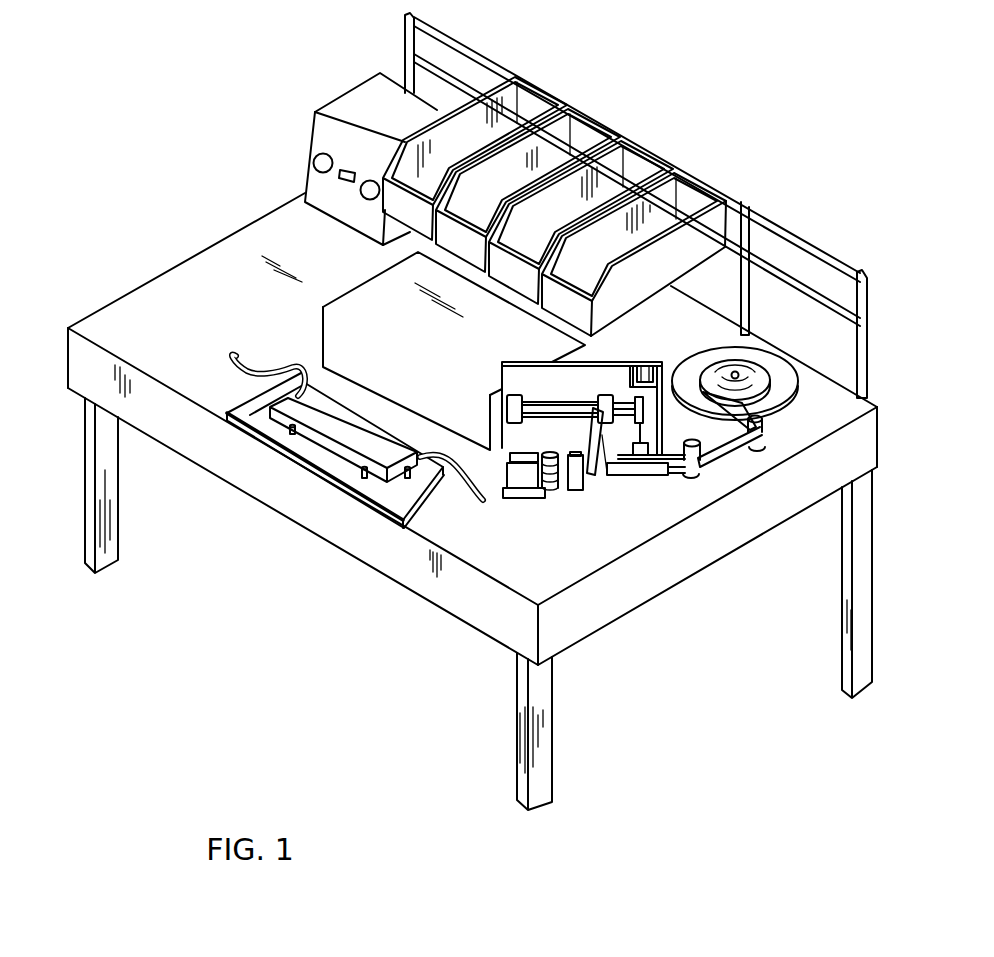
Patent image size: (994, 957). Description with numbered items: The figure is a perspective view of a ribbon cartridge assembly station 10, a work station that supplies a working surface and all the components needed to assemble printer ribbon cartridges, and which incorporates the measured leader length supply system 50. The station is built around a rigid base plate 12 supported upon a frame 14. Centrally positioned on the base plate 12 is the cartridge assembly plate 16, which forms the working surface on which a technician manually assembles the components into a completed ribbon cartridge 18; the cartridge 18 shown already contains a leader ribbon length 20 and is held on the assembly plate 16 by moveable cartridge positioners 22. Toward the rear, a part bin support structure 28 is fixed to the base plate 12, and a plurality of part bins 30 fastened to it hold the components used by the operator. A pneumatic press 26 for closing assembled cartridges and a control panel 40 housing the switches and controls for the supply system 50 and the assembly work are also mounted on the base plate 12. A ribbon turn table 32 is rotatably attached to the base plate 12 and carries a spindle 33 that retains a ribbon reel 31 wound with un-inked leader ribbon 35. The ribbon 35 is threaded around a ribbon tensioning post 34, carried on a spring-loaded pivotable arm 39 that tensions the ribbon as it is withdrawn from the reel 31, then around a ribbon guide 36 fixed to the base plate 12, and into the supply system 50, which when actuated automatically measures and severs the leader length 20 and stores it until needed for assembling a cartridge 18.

The ribbon cartridge assembly station 10 is at (212, 224).
The base plate 12 is at (133, 336).
The frame 14 is at (110, 538).
The cartridge assembly plate 16 is at (412, 500).
The ribbon cartridge 18 is at (350, 441).
The leader ribbon length 20 is at (268, 372).
The moveable cartridge positioners 22 is at (360, 474).
The pneumatic press 26 is at (556, 363).
The part bin support structure 28 is at (746, 213).
The part bins 30 is at (538, 100).
The ribbon reel 31 is at (752, 371).
The ribbon turn table 32 is at (792, 385).
The spindle 33 is at (739, 373).
The ribbon tensioning post 34 is at (766, 422).
The leader ribbon 35 is at (713, 462).
The ribbon guide 36 is at (690, 480).
The pivotable arm 39 is at (724, 438).
The control panel 40 is at (357, 110).
The measured leader length supply system 50 is at (613, 490).